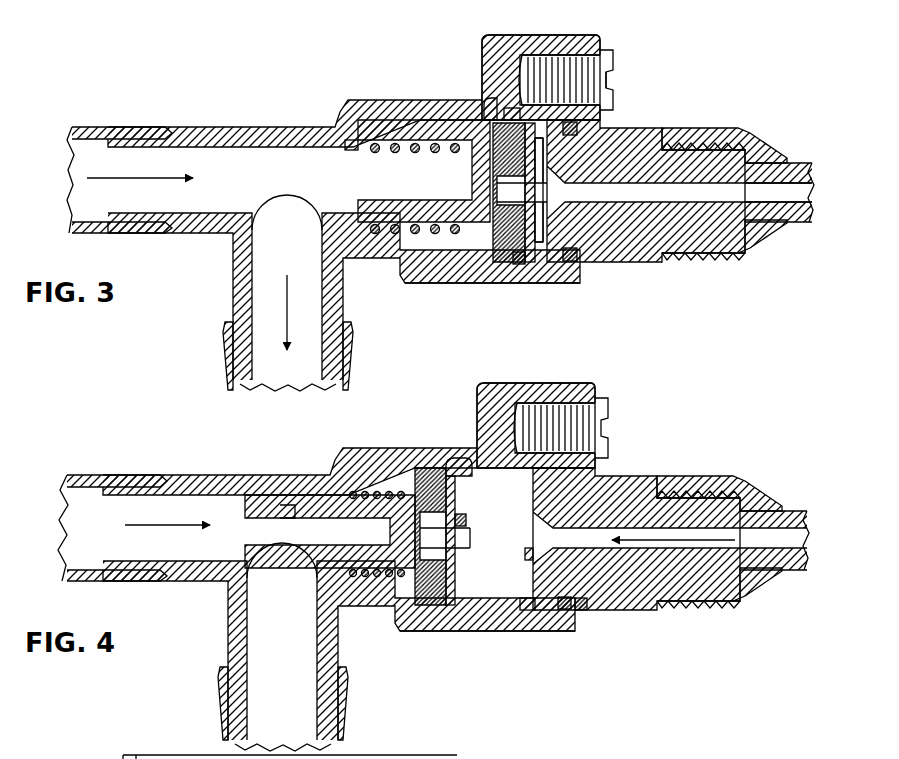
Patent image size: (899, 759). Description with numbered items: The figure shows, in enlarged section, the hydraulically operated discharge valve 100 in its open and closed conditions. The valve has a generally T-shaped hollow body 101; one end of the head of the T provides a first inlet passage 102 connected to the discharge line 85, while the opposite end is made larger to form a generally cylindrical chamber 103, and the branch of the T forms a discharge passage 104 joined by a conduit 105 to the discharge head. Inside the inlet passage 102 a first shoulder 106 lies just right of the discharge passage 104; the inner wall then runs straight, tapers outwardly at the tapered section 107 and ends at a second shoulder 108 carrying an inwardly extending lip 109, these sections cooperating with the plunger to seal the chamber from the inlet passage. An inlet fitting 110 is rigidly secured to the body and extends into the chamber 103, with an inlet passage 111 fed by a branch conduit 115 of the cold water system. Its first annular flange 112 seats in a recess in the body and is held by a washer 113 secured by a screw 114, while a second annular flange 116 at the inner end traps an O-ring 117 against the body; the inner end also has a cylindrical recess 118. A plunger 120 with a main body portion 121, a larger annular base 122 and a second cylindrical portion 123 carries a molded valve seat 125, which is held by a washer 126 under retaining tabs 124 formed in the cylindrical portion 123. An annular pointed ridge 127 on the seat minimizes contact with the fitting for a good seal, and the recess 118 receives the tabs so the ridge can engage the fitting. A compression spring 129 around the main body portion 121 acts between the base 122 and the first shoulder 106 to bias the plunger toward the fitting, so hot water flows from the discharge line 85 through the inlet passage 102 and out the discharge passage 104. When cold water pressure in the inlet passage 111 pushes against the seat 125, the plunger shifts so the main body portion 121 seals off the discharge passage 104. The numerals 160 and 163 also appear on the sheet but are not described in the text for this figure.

In FIG. 3, the discharge line 85 is at (88, 132).
In FIG. 4, the discharge line 85 is at (90, 470).
In FIG. 3, the discharge valve 100 is at (287, 62).
In FIG. 3, the hollow body 101 is at (245, 122).
In FIG. 4, the hollow body 101 is at (240, 478).
In FIG. 3, the first inlet passage 102 is at (222, 204).
In FIG. 4, the first inlet passage 102 is at (173, 543).
In FIG. 3, the cylindrical chamber 103 is at (470, 259).
In FIG. 4, the cylindrical chamber 103 is at (493, 601).
In FIG. 3, the discharge passage 104 is at (315, 254).
In FIG. 4, the discharge passage 104 is at (297, 647).
In FIG. 3, the conduit 105 is at (232, 378).
In FIG. 4, the conduit 105 is at (222, 686).
In FIG. 3, the first shoulder 106 is at (383, 233).
In FIG. 3, the tapered section 107 is at (410, 257).
In FIG. 3, the second shoulder 108 is at (423, 257).
In FIG. 3, the lip 109 is at (453, 283).
In FIG. 3, the inlet fitting 110 is at (620, 240).
In FIG. 4, the inlet fitting 110 is at (634, 488).
In FIG. 3, the inlet passage 111 is at (738, 191).
In FIG. 4, the inlet passage 111 is at (718, 545).
In FIG. 3, the first annular flange 112 is at (600, 128).
In FIG. 4, the first annular flange 112 is at (588, 606).
In FIG. 3, the washer 113 is at (597, 40).
In FIG. 4, the washer 113 is at (598, 387).
In FIG. 3, the screw 114 is at (612, 65).
In FIG. 4, the screw 114 is at (606, 408).
In FIG. 3, the branch conduit 115 is at (800, 165).
In FIG. 4, the branch conduit 115 is at (800, 510).
In FIG. 3, the second annular flange 116 is at (513, 108).
In FIG. 4, the second annular flange 116 is at (528, 611).
In FIG. 3, the O-ring 117 is at (604, 98).
In FIG. 4, the O-ring 117 is at (563, 612).
In FIG. 3, the cylindrical recess 118 is at (570, 262).
In FIG. 4, the cylindrical recess 118 is at (531, 553).
In FIG. 3, the plunger 120 is at (392, 157).
In FIG. 4, the plunger 120 is at (333, 497).
In FIG. 3, the main body portion 121 is at (347, 150).
In FIG. 4, the main body portion 121 is at (290, 508).
In FIG. 3, the annular base 122 is at (485, 274).
In FIG. 4, the annular base 122 is at (408, 606).
In FIG. 3, the second cylindrical portion 123 is at (518, 268).
In FIG. 4, the second cylindrical portion 123 is at (440, 545).
In FIG. 3, the retaining tabs 124 is at (563, 287).
In FIG. 4, the retaining tabs 124 is at (462, 520).
In FIG. 3, the valve seat 125 is at (497, 127).
In FIG. 4, the valve seat 125 is at (437, 490).
In FIG. 3, the washer 126 is at (492, 147).
In FIG. 4, the washer 126 is at (455, 496).
In FIG. 3, the annular pointed ridge 127 is at (485, 48).
In FIG. 4, the annular pointed ridge 127 is at (475, 462).
In FIG. 3, the compression spring 129 is at (370, 235).
In FIG. 4, the compression spring 129 is at (390, 490).
In FIG. 4, the housing 160 is at (477, 752).
In FIG. 4, the fitting 163 is at (790, 758).